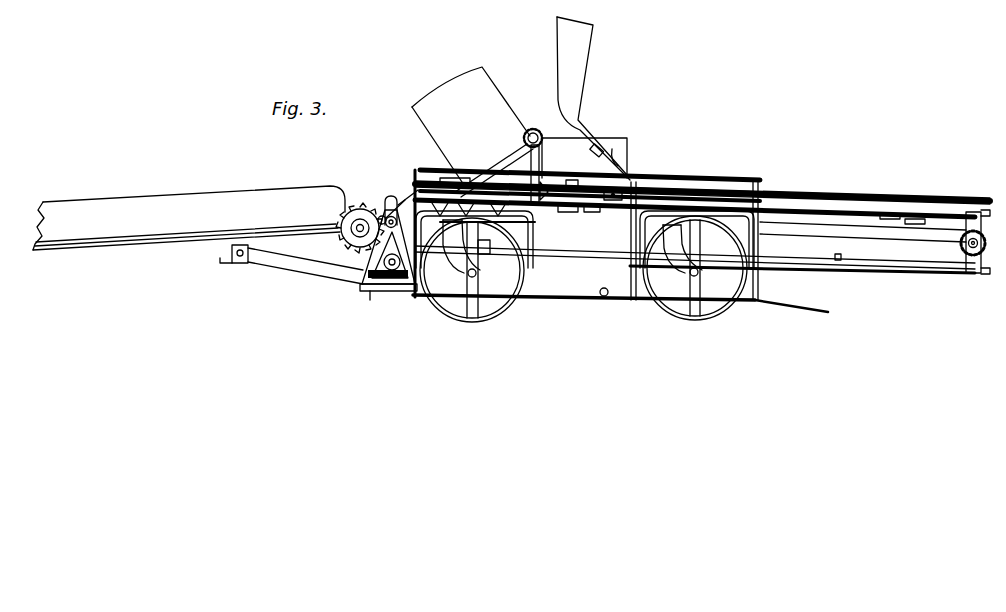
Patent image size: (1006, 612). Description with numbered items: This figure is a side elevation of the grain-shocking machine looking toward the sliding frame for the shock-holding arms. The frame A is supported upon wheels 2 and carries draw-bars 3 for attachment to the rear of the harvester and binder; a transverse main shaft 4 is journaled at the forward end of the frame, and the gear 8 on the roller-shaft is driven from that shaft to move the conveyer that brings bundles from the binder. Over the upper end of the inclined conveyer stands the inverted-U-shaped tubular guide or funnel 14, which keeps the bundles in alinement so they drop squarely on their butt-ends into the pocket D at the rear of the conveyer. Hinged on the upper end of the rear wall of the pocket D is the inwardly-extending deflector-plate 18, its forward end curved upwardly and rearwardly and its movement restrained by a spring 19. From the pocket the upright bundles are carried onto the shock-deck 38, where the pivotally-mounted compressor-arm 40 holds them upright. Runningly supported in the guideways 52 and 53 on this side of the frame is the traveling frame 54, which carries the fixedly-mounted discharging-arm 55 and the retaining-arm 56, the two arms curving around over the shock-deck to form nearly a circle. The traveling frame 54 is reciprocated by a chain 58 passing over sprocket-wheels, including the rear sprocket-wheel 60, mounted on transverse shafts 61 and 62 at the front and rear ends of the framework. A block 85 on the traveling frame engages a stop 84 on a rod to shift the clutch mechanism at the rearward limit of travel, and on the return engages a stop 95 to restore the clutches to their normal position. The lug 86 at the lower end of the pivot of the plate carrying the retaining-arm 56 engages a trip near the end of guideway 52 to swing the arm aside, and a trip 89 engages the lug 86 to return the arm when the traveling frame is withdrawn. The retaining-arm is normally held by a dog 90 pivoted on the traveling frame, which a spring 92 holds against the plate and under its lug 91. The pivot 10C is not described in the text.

The wheels 2 is at (450, 313).
The draw-bars 3 is at (300, 267).
The main shaft 4 is at (392, 272).
The gear 8 is at (342, 216).
The pivot 10C is at (534, 128).
The tubular guide or funnel 14 is at (471, 124).
The deflector-plate 18 is at (593, 98).
The spring 19 is at (628, 148).
The shock-deck 38 is at (613, 297).
The compressor-arm 40 is at (467, 178).
The guideway 52 is at (822, 196).
The guideway 53 is at (885, 269).
The traveling frame 54 is at (489, 182).
The discharging-arm 55 is at (432, 181).
The retaining-arm 56 is at (678, 190).
The chain 58 is at (883, 228).
The sprocket-wheel 60 is at (959, 242).
The transverse shaft 61 is at (380, 208).
The transverse shaft 62 is at (972, 250).
The stop 84 is at (839, 261).
The block 85 is at (485, 249).
The lug 86 is at (590, 213).
The trip 89 is at (563, 213).
The dog 90 is at (555, 186).
The lug 91 is at (571, 186).
The spring 92 is at (543, 184).
The stop 95 is at (490, 286).
The frame A is at (588, 299).
The pocket D is at (580, 275).